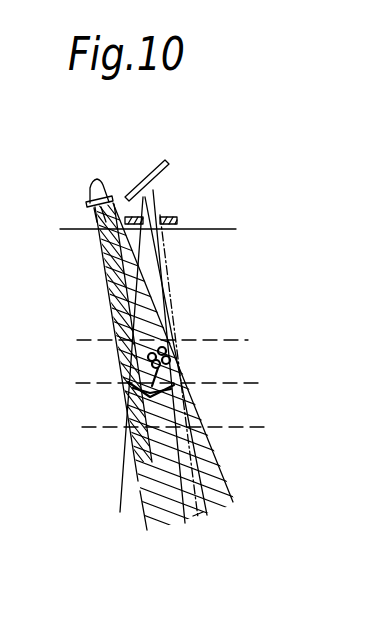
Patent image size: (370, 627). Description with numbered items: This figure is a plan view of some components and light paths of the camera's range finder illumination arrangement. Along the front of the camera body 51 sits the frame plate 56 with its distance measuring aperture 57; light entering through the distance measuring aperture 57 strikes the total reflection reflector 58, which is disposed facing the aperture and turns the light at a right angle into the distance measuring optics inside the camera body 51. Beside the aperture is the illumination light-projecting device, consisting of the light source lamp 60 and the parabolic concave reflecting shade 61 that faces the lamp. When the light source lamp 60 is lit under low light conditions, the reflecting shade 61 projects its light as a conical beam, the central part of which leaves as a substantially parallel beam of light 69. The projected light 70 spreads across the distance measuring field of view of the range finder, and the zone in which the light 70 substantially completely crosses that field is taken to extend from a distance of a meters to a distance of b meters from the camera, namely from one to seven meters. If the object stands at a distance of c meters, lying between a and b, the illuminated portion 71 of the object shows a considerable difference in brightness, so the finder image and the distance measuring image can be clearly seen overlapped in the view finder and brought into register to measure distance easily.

The camera body 51 is at (217, 223).
The frame plate 56 is at (150, 212).
The distance measuring aperture 57 is at (171, 214).
The total reflection reflector 58 is at (153, 166).
The light source lamp 60 is at (160, 257).
The parabolic concave reflecting shade 61 is at (95, 179).
The substantially parallel beam of light 69 is at (108, 259).
The light 70 is at (140, 412).
The portion of the object to be photographed 71 is at (173, 383).
The near distance of crossing range a is at (169, 338).
The far distance of crossing range b is at (180, 426).
The object distance c is at (177, 381).